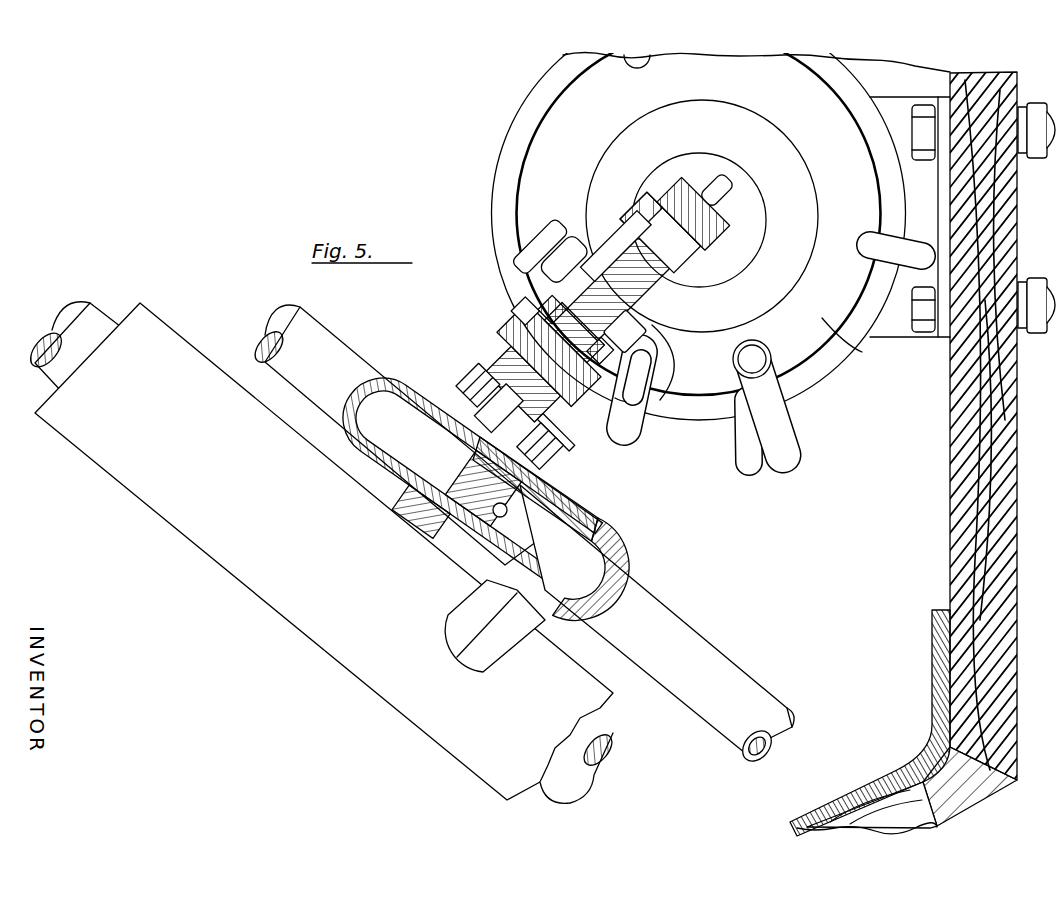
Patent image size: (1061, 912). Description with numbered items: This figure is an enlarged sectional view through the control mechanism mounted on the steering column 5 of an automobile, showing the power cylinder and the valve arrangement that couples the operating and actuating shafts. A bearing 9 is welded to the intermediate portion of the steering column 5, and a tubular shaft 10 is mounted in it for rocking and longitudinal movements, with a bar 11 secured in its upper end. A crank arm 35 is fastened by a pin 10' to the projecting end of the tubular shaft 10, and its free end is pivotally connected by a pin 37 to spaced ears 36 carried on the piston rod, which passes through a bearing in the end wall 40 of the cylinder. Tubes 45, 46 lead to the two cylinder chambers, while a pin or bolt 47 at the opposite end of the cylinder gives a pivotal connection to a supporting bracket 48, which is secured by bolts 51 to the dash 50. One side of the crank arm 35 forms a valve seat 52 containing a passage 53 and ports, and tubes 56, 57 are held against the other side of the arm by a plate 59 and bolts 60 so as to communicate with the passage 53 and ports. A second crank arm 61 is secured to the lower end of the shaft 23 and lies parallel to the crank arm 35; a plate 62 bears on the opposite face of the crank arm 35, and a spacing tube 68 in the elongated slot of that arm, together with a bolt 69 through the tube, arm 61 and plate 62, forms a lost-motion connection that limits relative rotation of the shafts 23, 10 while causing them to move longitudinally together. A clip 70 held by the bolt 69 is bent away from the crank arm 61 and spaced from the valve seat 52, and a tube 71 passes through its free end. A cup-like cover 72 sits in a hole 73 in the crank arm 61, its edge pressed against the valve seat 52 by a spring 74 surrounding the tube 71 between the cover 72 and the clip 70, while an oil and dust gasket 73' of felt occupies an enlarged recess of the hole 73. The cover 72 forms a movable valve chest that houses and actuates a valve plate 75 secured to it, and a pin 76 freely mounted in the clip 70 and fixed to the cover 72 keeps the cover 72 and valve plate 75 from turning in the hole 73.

The steering column 5 is at (402, 698).
The bearing 9 is at (603, 548).
The tubular shaft 10 is at (657, 626).
The pin 10' is at (479, 600).
The bar 11 is at (578, 510).
The shaft 23 is at (340, 355).
The crank arm 35 is at (556, 404).
The spaced ears 36 is at (702, 185).
The pin 37 is at (718, 224).
The end wall 40 is at (852, 344).
The tube 45 is at (740, 445).
The tube 46 is at (784, 450).
The pin or bolt 47 is at (826, 382).
The supporting bracket 48 is at (900, 338).
The dash 50 is at (962, 400).
The bolts 51 is at (918, 130).
The valve seat 52 is at (646, 288).
The passage 53 is at (625, 332).
The tube 56 is at (642, 398).
The tube 57 is at (640, 420).
The plate 59 is at (638, 376).
The bolts 60 is at (655, 334).
The crank arm 61 is at (525, 366).
The plate 62 is at (560, 418).
The spacing tube 68 is at (558, 450).
The bolt 69 is at (470, 373).
The clip 70 is at (525, 337).
The tube 71 is at (545, 250).
The cup-like cover 72 is at (602, 252).
The hole 73 is at (596, 365).
The oil and dust gasket 73' is at (670, 236).
The spring 74 is at (560, 262).
The valve plate 75 is at (538, 308).
The pin 76 is at (545, 318).